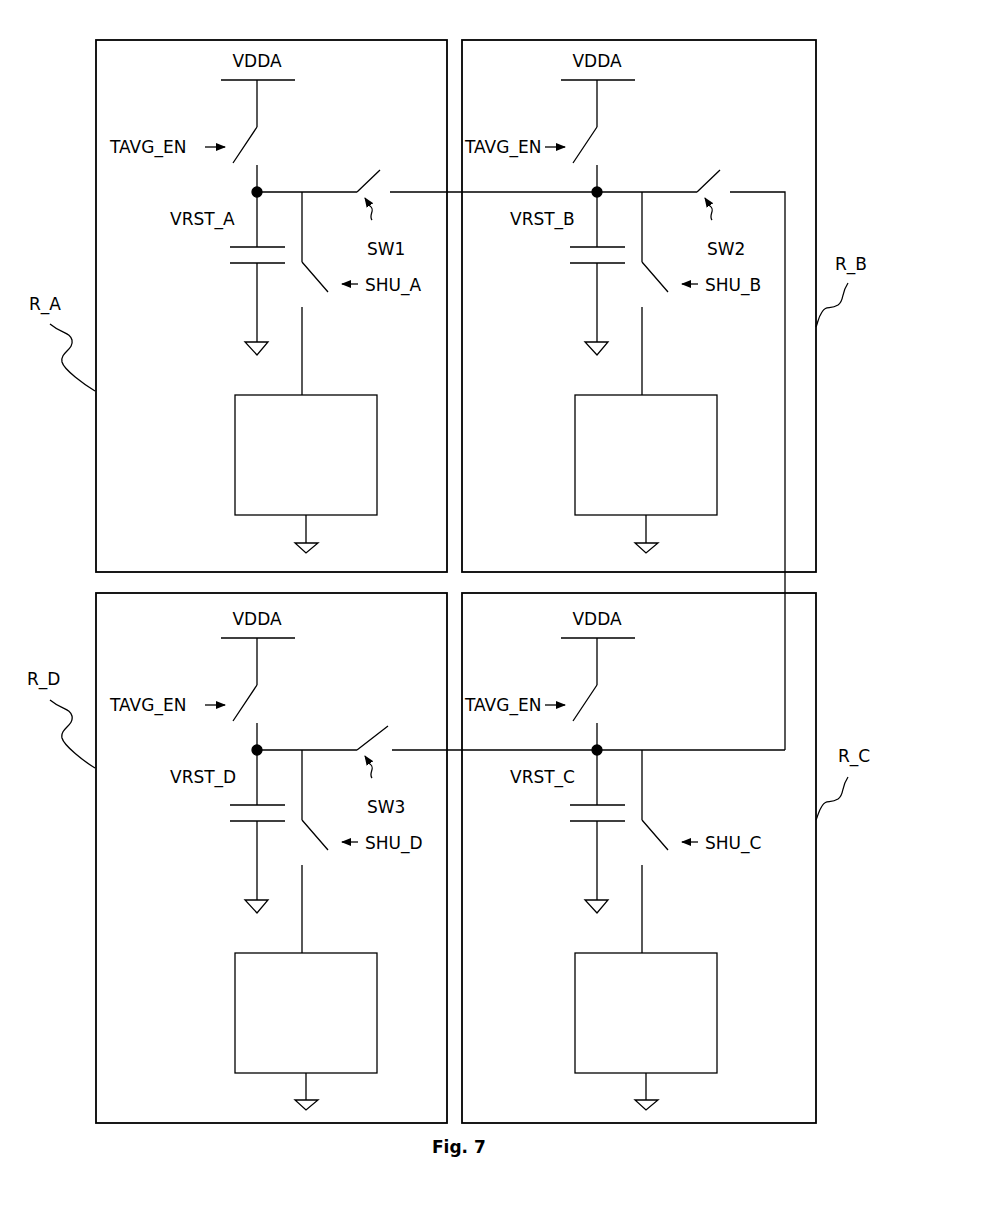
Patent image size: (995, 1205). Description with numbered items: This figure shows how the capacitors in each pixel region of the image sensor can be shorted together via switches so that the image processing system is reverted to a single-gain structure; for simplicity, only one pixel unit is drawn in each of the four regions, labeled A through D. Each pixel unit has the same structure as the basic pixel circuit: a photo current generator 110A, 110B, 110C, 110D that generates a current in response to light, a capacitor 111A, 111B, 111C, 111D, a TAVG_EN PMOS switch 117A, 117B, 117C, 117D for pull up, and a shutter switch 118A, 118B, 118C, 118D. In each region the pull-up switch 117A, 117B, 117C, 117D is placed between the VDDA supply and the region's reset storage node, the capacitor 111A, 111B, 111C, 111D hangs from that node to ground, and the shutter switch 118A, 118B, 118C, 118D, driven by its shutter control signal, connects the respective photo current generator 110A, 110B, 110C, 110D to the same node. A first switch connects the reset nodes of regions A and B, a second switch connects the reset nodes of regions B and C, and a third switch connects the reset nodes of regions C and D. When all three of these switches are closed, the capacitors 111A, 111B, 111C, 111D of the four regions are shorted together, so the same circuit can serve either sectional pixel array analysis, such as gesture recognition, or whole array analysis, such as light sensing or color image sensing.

The TAVG_EN PMOS switch 117A is at (262, 138).
The TAVG_EN PMOS switch 117B is at (602, 138).
The TAVG_EN PMOS switch 117C is at (602, 696).
The TAVG_EN PMOS switch 117D is at (262, 696).
The capacitor 111A is at (245, 264).
The capacitor 111B is at (585, 264).
The capacitor 111C is at (585, 822).
The capacitor 111D is at (245, 822).
The shutter switch 118A is at (319, 299).
The shutter switch 118B is at (659, 299).
The shutter switch 118C is at (659, 857).
The shutter switch 118D is at (319, 857).
The photo current generator 110A is at (306, 455).
The photo current generator 110B is at (646, 455).
The photo current generator 110C is at (646, 1013).
The photo current generator 110D is at (306, 1013).